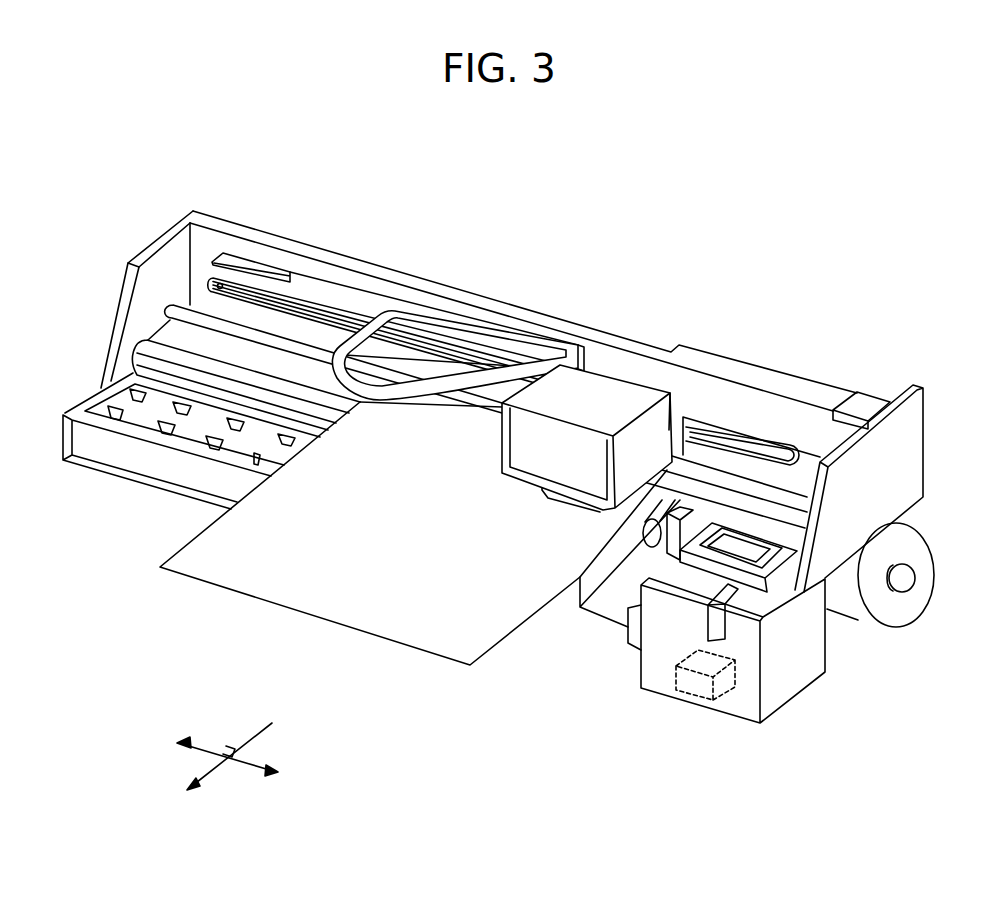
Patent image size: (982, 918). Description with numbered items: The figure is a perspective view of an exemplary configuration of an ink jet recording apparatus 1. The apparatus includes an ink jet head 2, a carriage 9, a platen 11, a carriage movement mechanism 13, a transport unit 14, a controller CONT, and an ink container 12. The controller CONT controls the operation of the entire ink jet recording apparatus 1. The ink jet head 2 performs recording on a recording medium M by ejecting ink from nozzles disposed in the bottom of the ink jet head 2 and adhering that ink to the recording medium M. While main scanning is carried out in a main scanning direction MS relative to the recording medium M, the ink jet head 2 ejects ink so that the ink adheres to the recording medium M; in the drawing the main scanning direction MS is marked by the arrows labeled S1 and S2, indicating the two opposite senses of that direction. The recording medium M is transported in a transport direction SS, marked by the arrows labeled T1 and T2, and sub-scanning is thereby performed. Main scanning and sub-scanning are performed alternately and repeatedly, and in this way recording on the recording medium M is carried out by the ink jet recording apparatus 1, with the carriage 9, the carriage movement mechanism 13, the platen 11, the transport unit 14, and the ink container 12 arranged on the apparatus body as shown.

The ink jet recording apparatus 1 is at (400, 268).
The ink jet head 2 is at (557, 493).
The carriage 9 is at (678, 418).
The platen 11 is at (138, 420).
The ink container 12 is at (580, 390).
The carriage movement mechanism 13 is at (772, 428).
The transport unit 14 is at (838, 634).
The controller CONT is at (696, 695).
The recording medium M is at (215, 557).
The transport direction SS is at (247, 747).
The main scanning direction MS is at (240, 760).
The transport direction side 1 T1 is at (291, 720).
The transport direction side 2 T2 is at (167, 797).
The scanning direction side 1 S1 is at (299, 777).
The scanning direction side 2 S2 is at (156, 743).